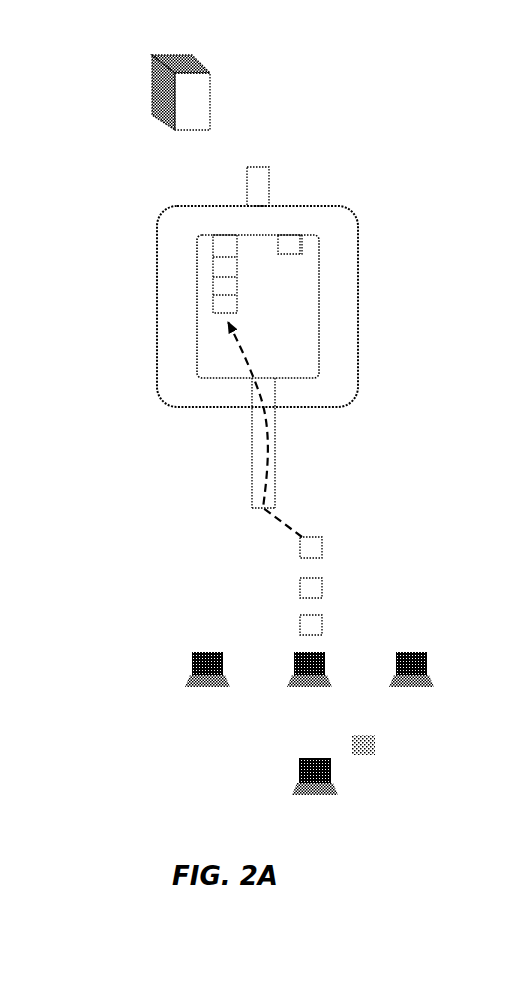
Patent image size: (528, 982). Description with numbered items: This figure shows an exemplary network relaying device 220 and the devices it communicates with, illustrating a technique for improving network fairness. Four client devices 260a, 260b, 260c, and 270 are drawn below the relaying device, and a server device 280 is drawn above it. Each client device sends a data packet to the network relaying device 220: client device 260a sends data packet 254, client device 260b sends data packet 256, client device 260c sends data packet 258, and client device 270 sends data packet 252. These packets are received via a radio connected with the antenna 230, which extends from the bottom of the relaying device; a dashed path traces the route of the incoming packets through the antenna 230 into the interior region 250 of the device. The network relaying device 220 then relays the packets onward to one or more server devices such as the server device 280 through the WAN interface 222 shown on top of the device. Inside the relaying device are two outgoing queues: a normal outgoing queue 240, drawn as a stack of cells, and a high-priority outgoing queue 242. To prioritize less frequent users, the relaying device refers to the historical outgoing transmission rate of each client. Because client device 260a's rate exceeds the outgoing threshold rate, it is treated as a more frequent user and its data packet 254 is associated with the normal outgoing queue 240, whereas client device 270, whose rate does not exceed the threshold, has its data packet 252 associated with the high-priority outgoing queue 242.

The network relaying device 220 is at (157, 222).
The WAN interface 222 is at (258, 166).
The antenna 230 is at (252, 492).
The normal outgoing queue 240 is at (212, 310).
The high-priority outgoing queue 242 is at (303, 253).
The processing area 250 is at (290, 362).
The data packet 252 is at (377, 749).
The data packet 254 is at (323, 548).
The data packet 256 is at (323, 588).
The data packet 258 is at (323, 625).
The client device 260a is at (207, 690).
The client device 260b is at (309, 690).
The client device 260c is at (411, 690).
The client device 270 is at (315, 800).
The server device 280 is at (137, 98).